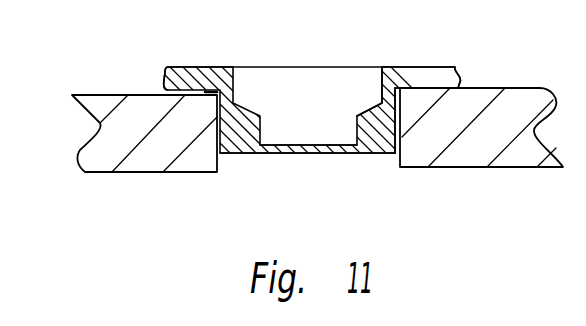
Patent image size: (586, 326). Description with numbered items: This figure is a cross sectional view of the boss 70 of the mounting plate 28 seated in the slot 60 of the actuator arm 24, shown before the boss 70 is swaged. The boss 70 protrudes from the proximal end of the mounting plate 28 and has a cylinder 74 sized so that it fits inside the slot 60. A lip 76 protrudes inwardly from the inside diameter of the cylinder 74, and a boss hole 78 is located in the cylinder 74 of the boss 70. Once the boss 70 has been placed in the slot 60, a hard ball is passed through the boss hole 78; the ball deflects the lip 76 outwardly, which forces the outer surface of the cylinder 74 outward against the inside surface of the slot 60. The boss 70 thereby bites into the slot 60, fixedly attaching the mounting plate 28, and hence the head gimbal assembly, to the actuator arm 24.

The actuator arm 24 is at (80, 154).
The mounting plate 28 is at (163, 80).
The slot 60 is at (217, 162).
The boss 70 is at (347, 165).
The cylinder 74 is at (402, 70).
The lip 76 is at (392, 140).
The boss hole 78 is at (236, 88).